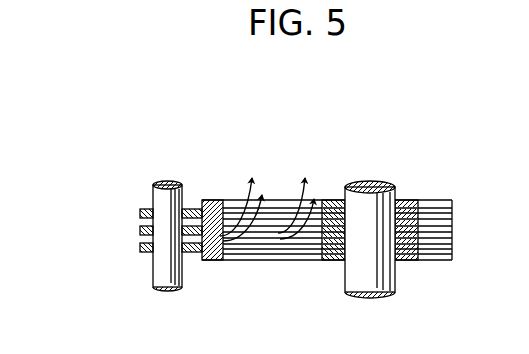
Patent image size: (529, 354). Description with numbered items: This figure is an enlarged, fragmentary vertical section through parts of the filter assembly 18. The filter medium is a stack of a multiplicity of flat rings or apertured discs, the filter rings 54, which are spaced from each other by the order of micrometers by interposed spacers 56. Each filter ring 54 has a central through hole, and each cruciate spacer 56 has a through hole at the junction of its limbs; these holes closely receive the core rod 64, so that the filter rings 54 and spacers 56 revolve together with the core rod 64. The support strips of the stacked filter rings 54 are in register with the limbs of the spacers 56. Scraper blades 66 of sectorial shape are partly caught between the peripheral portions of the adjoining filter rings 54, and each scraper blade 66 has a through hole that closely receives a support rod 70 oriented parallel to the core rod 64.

The filter assembly 18 is at (228, 168).
The filter rings 54 is at (409, 200).
The spacers 56 is at (332, 228).
The core rod 64 is at (360, 270).
The scraper blades 66 is at (141, 248).
The support rod 70 is at (161, 277).